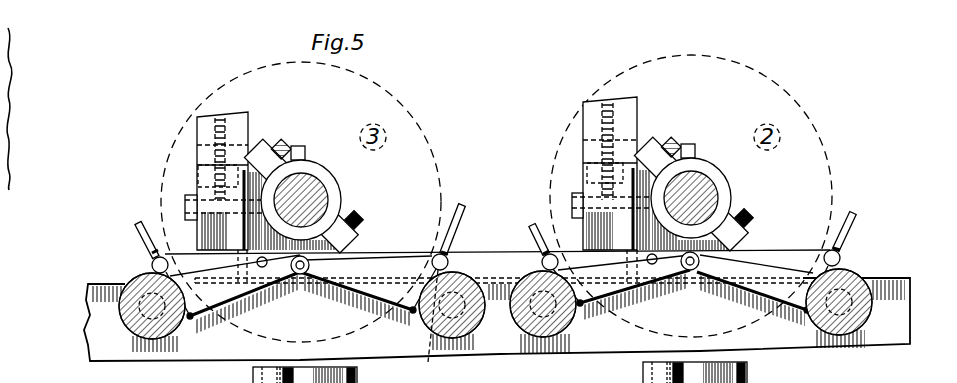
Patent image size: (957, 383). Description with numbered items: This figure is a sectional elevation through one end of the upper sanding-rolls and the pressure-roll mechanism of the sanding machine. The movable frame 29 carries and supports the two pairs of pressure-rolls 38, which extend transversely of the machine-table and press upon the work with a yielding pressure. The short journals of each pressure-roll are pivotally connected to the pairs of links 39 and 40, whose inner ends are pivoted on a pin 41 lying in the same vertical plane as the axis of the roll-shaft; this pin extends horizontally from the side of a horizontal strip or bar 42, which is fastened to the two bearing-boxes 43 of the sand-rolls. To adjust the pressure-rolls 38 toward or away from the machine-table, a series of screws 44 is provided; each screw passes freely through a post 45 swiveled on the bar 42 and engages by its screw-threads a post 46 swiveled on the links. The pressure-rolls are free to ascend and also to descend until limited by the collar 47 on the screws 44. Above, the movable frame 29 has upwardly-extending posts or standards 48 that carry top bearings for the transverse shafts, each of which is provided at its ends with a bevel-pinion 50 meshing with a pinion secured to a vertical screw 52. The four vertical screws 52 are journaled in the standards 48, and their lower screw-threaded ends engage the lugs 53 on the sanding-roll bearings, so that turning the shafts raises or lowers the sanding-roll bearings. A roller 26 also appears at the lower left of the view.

The roller 26 is at (147, 335).
The movable frame 29 is at (88, 340).
The pressure-rolls 38 is at (527, 330).
The links 39 is at (232, 288).
The links 40 is at (397, 303).
The pin 41 is at (300, 274).
The horizontal strip or bar 42 is at (497, 266).
The bearing-boxes 43 is at (320, 228).
The screws 44 is at (137, 224).
The posts 45 is at (152, 266).
The posts 46 is at (472, 243).
The collar 47 is at (152, 261).
The posts or standards 48 is at (235, 123).
The bevel-pinion 50 is at (213, 377).
The vertical screw 52 is at (215, 112).
The lugs 53 is at (197, 174).